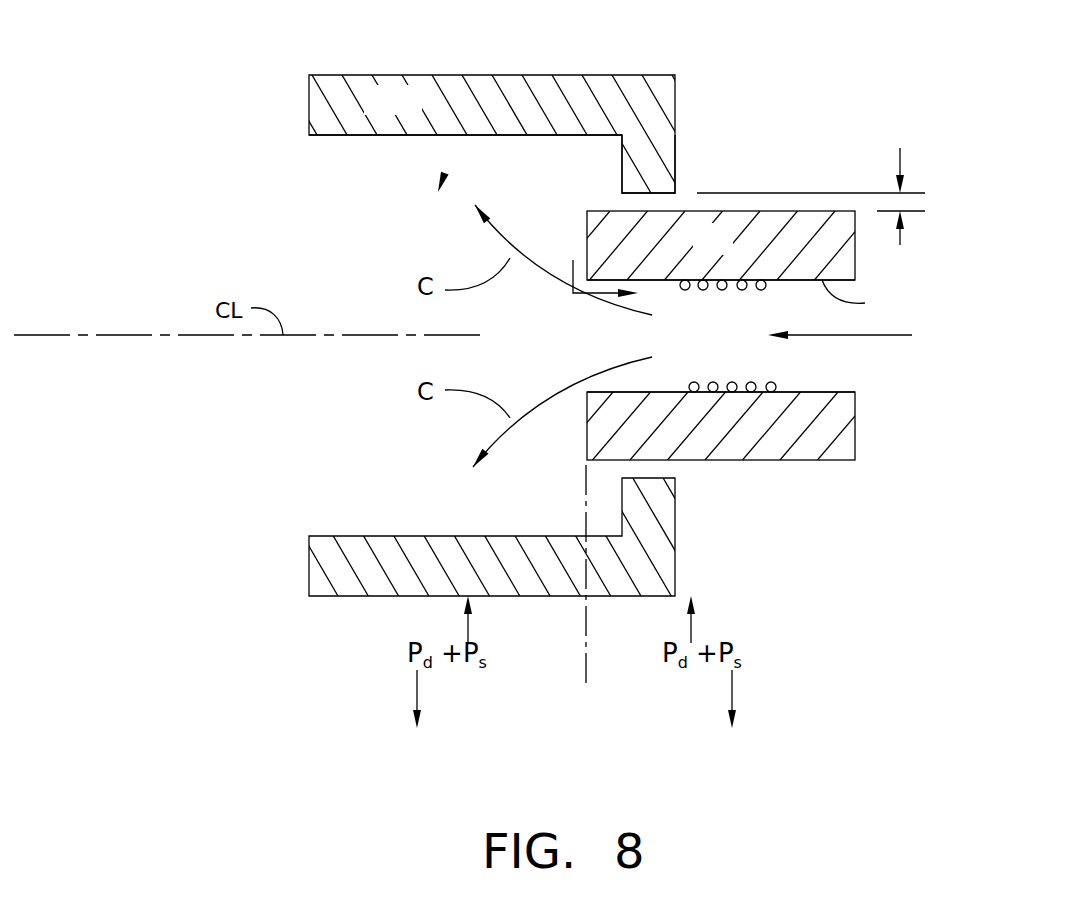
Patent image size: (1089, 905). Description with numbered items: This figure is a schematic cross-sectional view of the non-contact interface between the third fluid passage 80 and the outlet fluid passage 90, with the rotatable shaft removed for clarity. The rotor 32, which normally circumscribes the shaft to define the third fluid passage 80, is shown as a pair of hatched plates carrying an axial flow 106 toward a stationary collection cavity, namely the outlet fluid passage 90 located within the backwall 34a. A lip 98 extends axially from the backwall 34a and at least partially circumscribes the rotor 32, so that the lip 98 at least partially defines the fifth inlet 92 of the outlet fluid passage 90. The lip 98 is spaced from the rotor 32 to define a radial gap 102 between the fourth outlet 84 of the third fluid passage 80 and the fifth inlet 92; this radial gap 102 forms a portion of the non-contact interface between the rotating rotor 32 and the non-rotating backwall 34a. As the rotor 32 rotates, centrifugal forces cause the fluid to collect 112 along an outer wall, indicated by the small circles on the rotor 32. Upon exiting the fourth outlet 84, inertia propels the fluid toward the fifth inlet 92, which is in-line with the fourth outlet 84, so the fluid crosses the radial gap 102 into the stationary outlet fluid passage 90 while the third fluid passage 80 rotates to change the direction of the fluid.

The backwall 34a is at (418, 112).
The outlet fluid passage 90 is at (388, 171).
The fifth inlet 92 is at (438, 192).
The lip 98 is at (648, 152).
The rotor 32 is at (728, 252).
The fourth outlet 84 is at (593, 260).
The third fluid passage 80 is at (710, 339).
The radial gap 102 is at (923, 200).
The axial flow 106 is at (882, 335).
The collection of fluid 112 is at (732, 390).